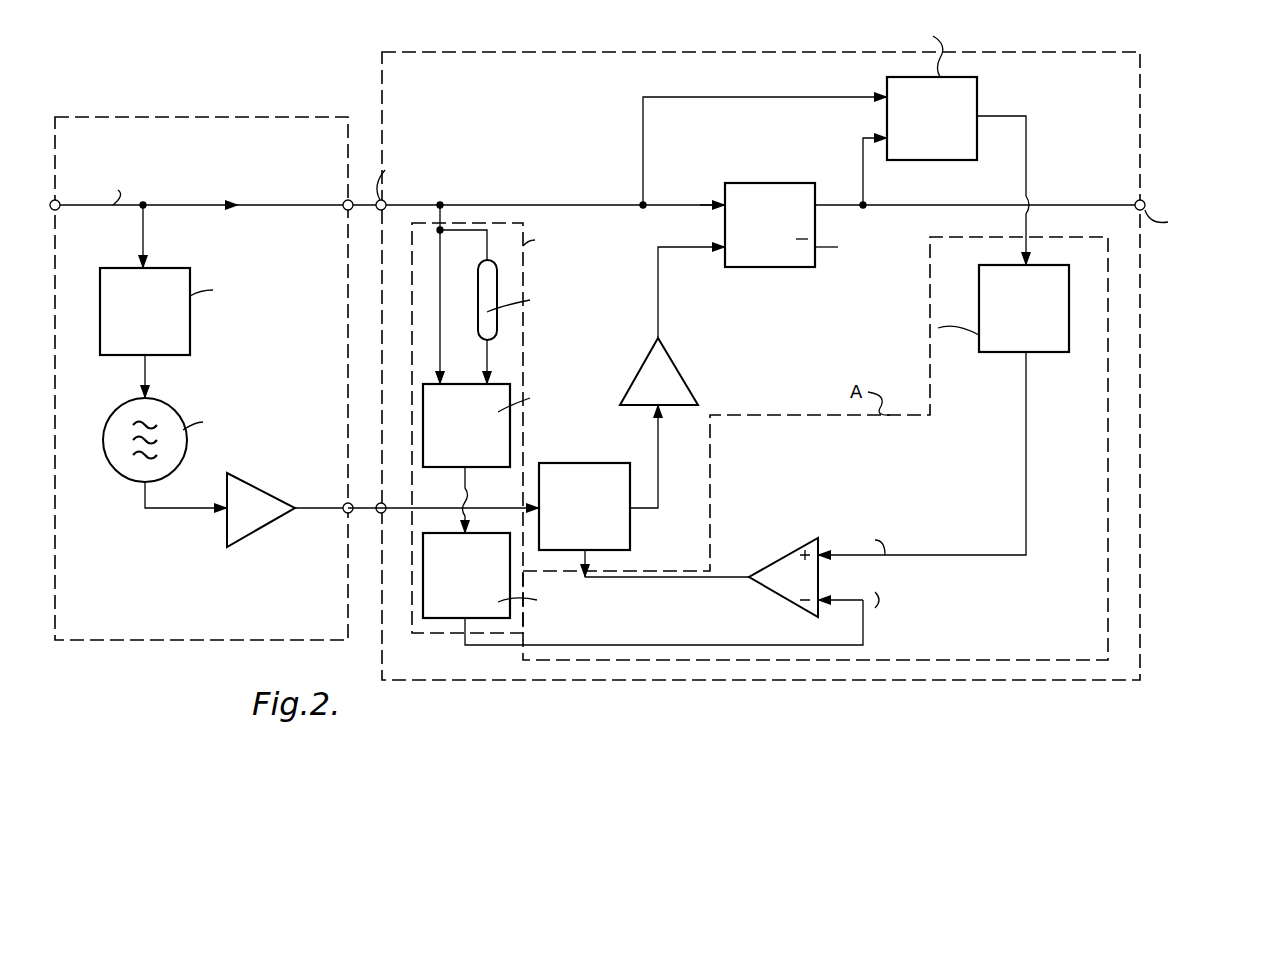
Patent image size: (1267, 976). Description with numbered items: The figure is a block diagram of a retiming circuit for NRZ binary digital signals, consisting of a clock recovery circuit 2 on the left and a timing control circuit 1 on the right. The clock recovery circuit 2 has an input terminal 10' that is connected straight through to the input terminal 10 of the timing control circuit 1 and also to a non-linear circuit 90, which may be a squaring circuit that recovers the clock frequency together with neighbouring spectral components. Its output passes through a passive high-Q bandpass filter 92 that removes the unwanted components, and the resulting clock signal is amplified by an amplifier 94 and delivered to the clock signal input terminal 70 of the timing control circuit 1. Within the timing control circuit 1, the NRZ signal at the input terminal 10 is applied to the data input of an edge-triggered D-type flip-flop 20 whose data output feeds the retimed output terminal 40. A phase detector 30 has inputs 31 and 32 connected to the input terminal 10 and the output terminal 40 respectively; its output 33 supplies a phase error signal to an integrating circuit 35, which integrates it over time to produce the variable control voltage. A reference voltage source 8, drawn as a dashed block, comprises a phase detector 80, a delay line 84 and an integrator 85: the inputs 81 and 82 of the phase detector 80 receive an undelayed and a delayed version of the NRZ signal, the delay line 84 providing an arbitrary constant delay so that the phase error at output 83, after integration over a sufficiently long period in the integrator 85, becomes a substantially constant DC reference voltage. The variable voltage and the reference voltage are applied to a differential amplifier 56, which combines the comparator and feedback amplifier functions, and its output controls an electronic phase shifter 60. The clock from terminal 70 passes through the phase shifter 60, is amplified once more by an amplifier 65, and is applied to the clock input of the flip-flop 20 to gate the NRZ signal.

The timing control circuit 1 is at (523, 52).
The clock recovery circuit 2 is at (215, 117).
The reference voltage source 8 is at (524, 345).
The input terminal 10 is at (406, 179).
The input terminal 10' is at (92, 202).
The flip-flop 20 is at (765, 268).
The phase detector 30 is at (926, 80).
The phase detector input 31 is at (882, 95).
The phase detector input 32 is at (882, 137).
The phase detector output 33 is at (980, 116).
The integrating circuit 35 is at (959, 308).
The output terminal 40 is at (1143, 202).
The differential amplifier 56 is at (775, 568).
The phase shifter 60 is at (648, 506).
The amplifier 65 is at (682, 380).
The clock signal input terminal 70 is at (375, 510).
The phase detector 80 is at (519, 425).
The phase detector input 81 is at (442, 380).
The phase detector input 82 is at (490, 380).
The phase detector output 83 is at (470, 470).
The delay line 84 is at (497, 294).
The integrator 85 is at (547, 575).
The non-linear circuit 90 is at (189, 280).
The bandpass filter 92 is at (180, 418).
The amplifier 94 is at (266, 495).